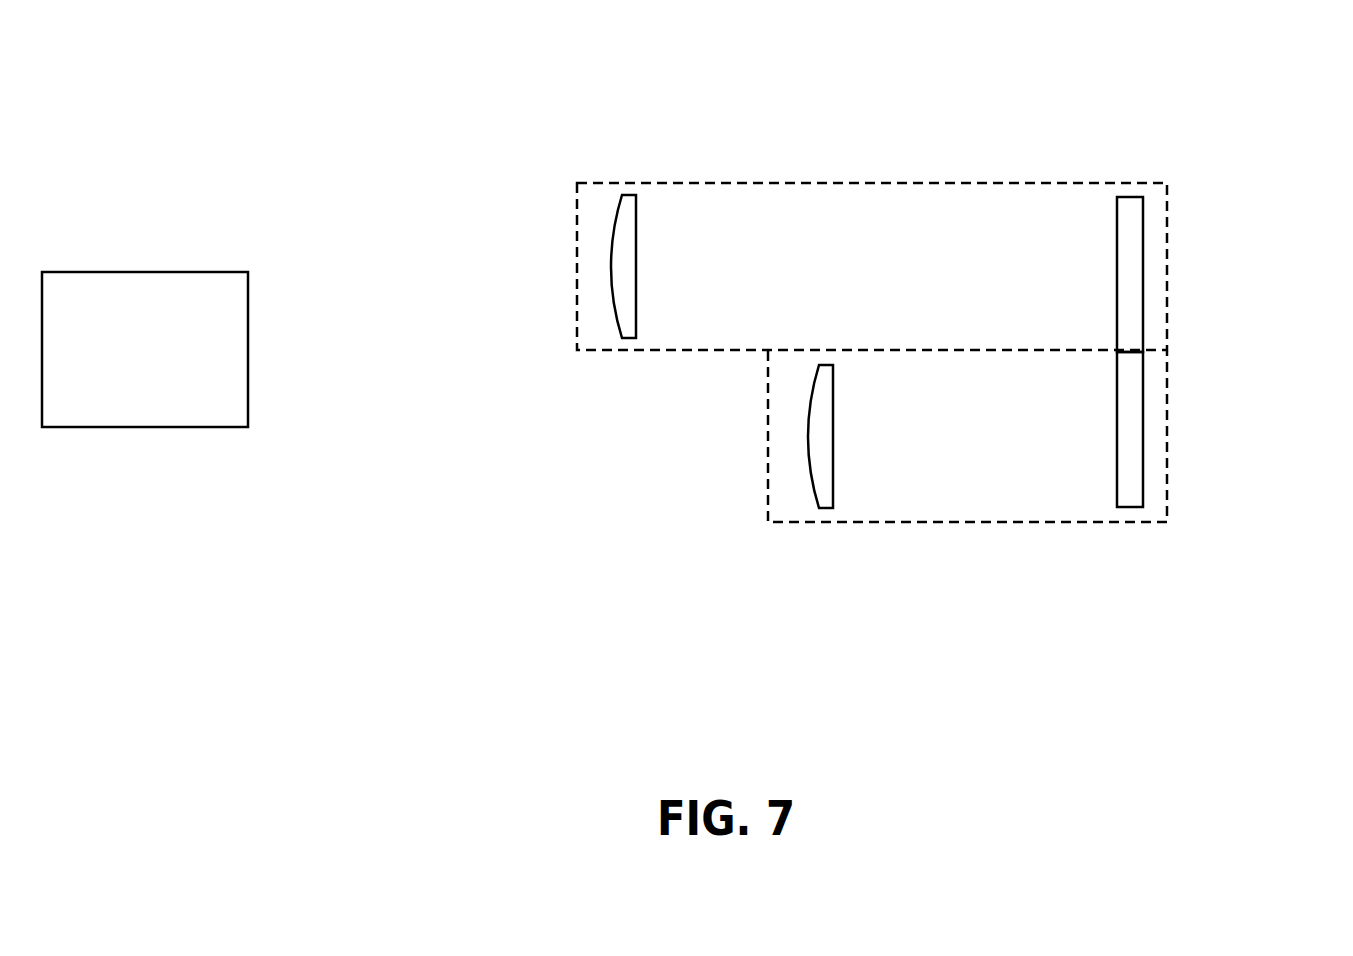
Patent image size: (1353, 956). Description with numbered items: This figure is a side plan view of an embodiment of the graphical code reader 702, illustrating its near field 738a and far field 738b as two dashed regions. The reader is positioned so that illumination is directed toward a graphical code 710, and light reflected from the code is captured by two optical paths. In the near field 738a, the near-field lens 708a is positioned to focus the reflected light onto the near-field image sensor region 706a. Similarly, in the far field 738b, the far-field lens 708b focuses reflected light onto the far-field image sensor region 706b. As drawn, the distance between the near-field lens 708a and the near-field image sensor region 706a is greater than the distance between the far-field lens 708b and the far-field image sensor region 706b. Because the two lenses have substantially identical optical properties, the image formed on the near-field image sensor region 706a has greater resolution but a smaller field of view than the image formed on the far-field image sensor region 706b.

The graphical code reader 702 is at (348, 132).
The graphical code 710 is at (220, 386).
The near field 738a is at (741, 183).
The far field 738b is at (960, 522).
The near-field lens 708a is at (610, 267).
The far-field lens 708b is at (810, 437).
The near-field image sensor region 706a is at (1143, 260).
The far-field image sensor region 706b is at (1143, 420).